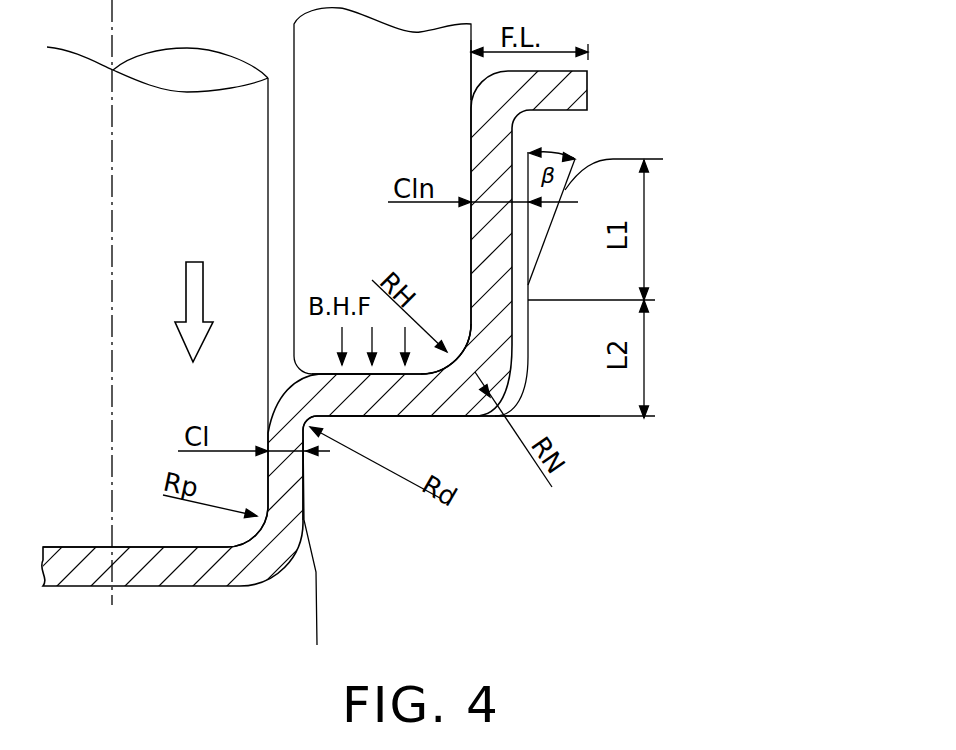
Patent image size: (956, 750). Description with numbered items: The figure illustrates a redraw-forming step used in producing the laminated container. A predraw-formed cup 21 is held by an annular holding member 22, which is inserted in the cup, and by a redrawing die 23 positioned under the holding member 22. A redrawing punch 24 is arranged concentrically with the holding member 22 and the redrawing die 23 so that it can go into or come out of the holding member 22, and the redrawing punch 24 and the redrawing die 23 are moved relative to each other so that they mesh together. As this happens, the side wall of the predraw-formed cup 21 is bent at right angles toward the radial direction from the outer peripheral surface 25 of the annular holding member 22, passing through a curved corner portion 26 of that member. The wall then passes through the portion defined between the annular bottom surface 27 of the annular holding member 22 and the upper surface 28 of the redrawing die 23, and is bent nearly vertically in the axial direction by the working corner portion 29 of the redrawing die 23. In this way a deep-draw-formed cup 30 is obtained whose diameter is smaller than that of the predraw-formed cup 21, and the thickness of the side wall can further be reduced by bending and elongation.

The predraw-formed cup 21 is at (493, 150).
The annular holding member 22 is at (390, 144).
The redrawing die 23 is at (482, 568).
The redrawing punch 24 is at (168, 225).
The outer peripheral surface 25 is at (471, 68).
The curved corner portion 26 is at (455, 343).
The annular bottom surface 27 is at (322, 373).
The upper surface 28 is at (457, 418).
The working corner portion 29 is at (318, 420).
The deep-draw-formed cup 30 is at (293, 470).